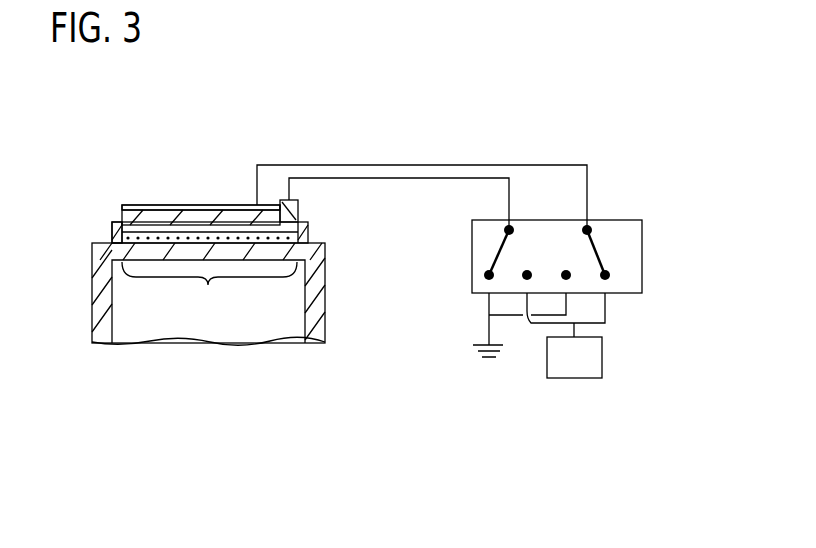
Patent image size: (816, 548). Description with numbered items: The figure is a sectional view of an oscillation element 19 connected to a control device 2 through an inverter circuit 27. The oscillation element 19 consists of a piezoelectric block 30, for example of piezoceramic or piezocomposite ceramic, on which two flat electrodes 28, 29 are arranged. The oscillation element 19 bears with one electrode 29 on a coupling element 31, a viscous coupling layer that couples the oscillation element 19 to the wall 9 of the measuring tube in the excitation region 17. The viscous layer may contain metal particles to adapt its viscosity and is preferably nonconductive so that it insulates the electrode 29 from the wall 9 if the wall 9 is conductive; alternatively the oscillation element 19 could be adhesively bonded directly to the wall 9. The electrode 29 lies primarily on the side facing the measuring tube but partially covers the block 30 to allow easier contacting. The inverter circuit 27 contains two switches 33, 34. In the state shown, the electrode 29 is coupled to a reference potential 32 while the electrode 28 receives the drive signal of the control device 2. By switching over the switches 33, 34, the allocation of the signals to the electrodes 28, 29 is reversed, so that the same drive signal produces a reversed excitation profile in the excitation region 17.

The control device 2 is at (582, 378).
The wall 9 is at (317, 302).
The excitation region 17 is at (209, 292).
The oscillation element 19 is at (186, 198).
The inverter circuit 27 is at (642, 273).
The electrode 28 is at (213, 217).
The electrode 29 is at (308, 226).
The piezoelectric block 30 is at (143, 220).
The coupling element 31 is at (115, 237).
The reference potential 32 is at (489, 362).
The switch 33 is at (512, 248).
The switch 34 is at (603, 250).